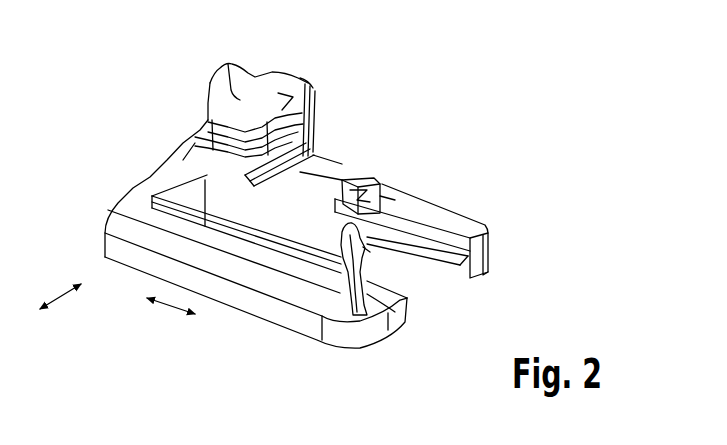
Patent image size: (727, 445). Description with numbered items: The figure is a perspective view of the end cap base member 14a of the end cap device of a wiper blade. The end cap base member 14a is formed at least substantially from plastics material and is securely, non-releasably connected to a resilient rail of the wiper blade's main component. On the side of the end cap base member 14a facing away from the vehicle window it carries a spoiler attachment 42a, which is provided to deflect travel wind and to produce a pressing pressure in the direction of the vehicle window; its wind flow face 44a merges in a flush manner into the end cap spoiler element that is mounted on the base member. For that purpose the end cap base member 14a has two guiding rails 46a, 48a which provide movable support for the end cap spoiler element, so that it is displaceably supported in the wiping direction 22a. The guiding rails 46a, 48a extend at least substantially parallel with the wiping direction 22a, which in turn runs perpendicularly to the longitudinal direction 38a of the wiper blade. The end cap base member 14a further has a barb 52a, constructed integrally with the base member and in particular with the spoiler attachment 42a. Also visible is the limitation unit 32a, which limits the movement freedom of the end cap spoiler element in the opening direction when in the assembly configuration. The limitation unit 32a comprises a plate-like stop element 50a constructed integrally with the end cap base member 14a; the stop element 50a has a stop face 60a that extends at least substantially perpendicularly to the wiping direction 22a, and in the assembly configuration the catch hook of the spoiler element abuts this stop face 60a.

The end cap base member 14a is at (172, 160).
The wiping direction 22a is at (60, 296).
The longitudinal direction 38a is at (167, 307).
The spoiler attachment 42a is at (267, 100).
The wind flow face 44a is at (303, 80).
The guiding rail 46a is at (312, 144).
The guiding rail 48a is at (428, 215).
The stop element 50a is at (343, 181).
The barb 52a is at (362, 242).
The stop face 60a is at (358, 176).
The limitation unit 32a is at (406, 177).